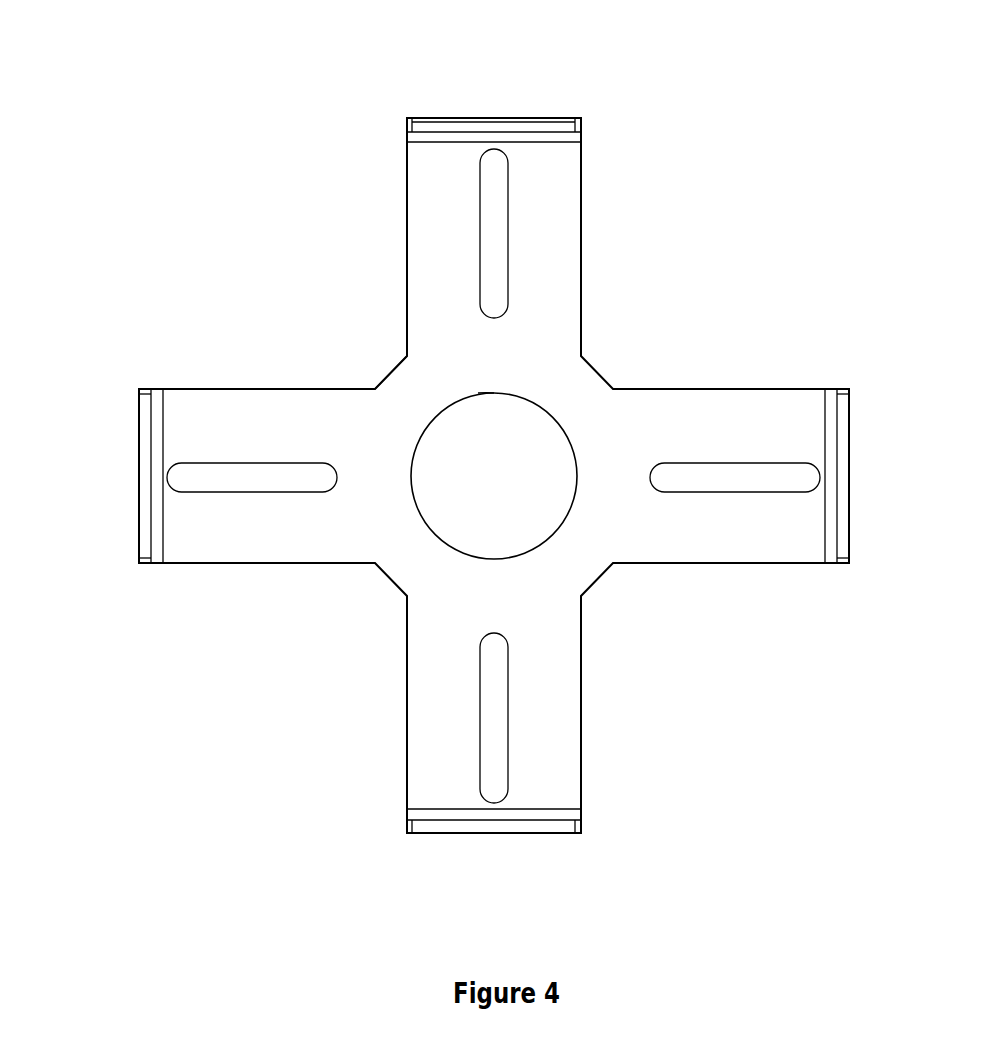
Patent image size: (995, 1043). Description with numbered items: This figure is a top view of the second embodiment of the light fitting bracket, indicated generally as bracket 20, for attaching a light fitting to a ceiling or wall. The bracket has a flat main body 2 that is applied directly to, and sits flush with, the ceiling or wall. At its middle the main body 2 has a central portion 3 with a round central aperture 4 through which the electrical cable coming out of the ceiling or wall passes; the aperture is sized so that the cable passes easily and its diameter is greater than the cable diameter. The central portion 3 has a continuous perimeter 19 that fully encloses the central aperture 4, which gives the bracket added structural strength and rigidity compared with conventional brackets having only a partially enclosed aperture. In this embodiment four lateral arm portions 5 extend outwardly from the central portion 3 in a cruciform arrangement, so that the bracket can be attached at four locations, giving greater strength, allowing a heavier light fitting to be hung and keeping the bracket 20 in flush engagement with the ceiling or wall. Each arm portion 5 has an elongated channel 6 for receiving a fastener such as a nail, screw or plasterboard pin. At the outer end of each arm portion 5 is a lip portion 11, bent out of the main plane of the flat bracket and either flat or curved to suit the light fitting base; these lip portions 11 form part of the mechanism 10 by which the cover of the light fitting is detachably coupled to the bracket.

The main body 2 is at (583, 547).
The central portion 3 is at (408, 395).
The central aperture 4 is at (488, 494).
The arm portions 5 is at (750, 407).
The elongated channels 6 is at (487, 237).
The mechanism 10 is at (484, 465).
The lip portions 11 is at (480, 120).
The continuous perimeter 19 is at (478, 393).
The bracket (second embodiment) 20 is at (245, 218).